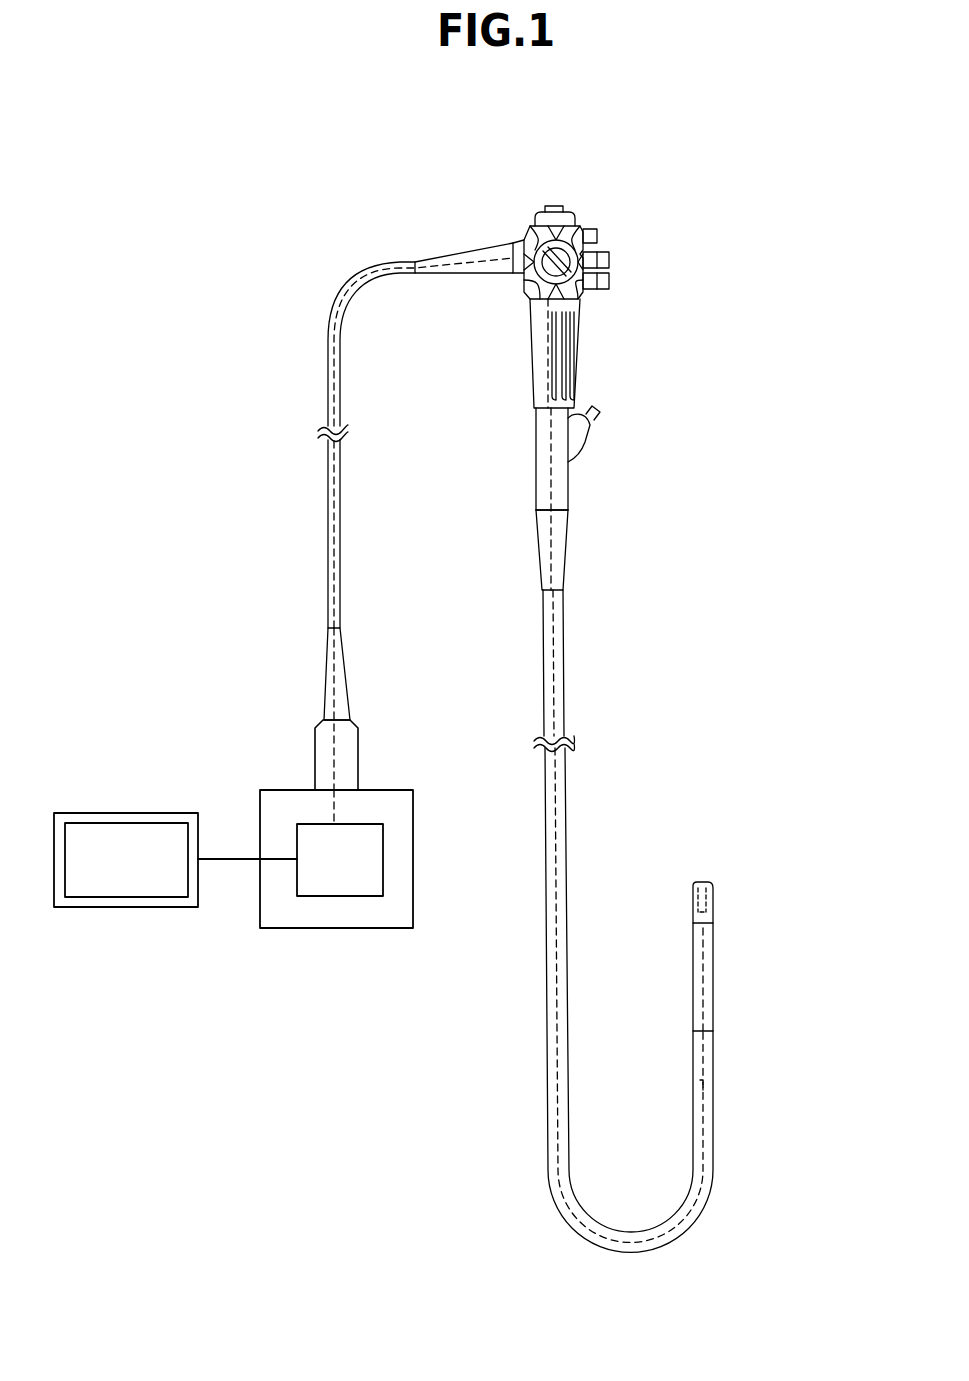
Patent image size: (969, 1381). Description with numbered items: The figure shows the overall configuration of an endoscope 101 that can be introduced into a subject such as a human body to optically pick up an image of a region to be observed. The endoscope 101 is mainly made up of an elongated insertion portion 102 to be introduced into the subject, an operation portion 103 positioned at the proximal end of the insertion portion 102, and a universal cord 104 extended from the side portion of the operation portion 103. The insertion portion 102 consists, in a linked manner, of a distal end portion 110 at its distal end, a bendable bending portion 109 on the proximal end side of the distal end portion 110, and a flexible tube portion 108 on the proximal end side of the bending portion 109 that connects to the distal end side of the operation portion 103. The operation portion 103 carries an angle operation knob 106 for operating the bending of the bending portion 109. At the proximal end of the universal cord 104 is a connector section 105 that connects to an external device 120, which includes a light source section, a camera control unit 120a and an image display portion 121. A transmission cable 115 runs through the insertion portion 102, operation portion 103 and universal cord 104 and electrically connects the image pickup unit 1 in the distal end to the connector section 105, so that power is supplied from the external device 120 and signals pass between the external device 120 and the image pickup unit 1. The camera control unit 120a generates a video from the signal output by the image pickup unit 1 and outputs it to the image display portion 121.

The endoscope 101 is at (236, 223).
The insertion portion 102 is at (676, 746).
The operation portion 103 is at (468, 360).
The universal cord 104 is at (360, 273).
The connector section 105 is at (315, 775).
The angle operation knob 106 is at (526, 284).
The flexible tube portion 108 is at (655, 1254).
The bending portion 109 is at (712, 982).
The distal end portion 110 is at (710, 905).
The transmission cable 115 is at (710, 1087).
The image pickup unit 1 is at (706, 886).
The external device 120 is at (338, 930).
The camera control unit 120a is at (383, 858).
The image display portion 121 is at (124, 908).